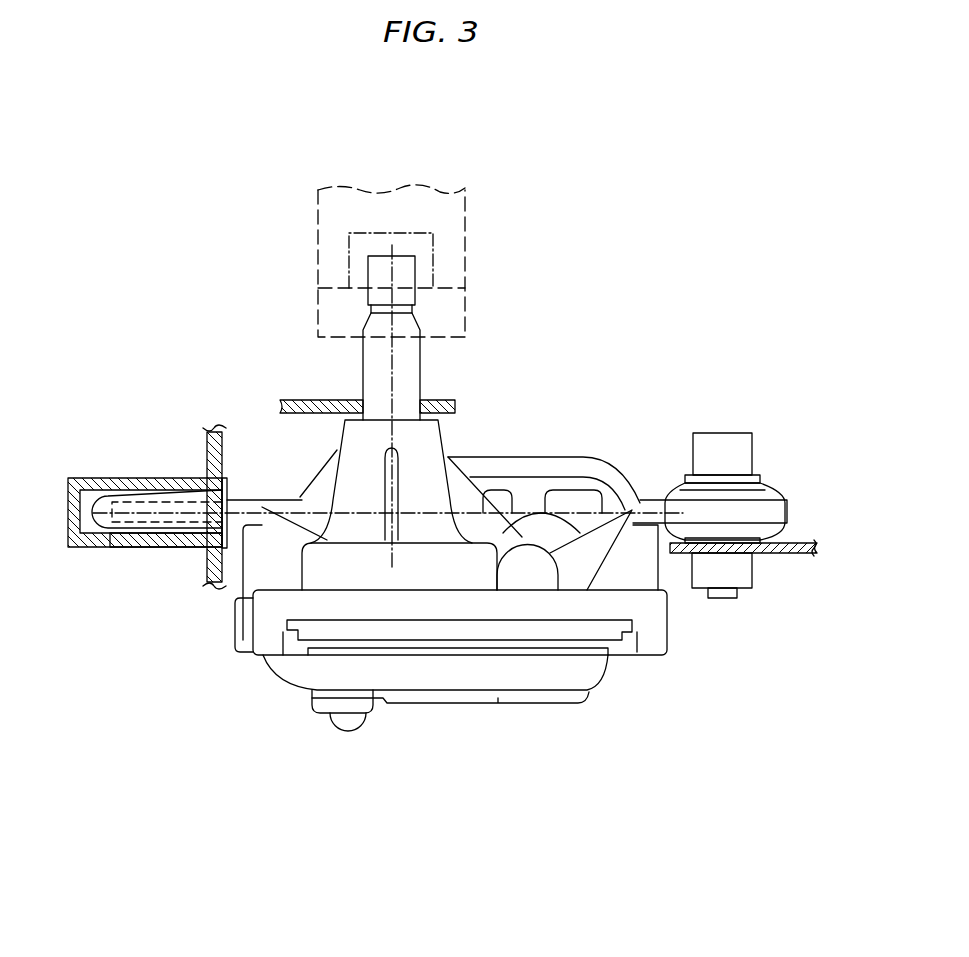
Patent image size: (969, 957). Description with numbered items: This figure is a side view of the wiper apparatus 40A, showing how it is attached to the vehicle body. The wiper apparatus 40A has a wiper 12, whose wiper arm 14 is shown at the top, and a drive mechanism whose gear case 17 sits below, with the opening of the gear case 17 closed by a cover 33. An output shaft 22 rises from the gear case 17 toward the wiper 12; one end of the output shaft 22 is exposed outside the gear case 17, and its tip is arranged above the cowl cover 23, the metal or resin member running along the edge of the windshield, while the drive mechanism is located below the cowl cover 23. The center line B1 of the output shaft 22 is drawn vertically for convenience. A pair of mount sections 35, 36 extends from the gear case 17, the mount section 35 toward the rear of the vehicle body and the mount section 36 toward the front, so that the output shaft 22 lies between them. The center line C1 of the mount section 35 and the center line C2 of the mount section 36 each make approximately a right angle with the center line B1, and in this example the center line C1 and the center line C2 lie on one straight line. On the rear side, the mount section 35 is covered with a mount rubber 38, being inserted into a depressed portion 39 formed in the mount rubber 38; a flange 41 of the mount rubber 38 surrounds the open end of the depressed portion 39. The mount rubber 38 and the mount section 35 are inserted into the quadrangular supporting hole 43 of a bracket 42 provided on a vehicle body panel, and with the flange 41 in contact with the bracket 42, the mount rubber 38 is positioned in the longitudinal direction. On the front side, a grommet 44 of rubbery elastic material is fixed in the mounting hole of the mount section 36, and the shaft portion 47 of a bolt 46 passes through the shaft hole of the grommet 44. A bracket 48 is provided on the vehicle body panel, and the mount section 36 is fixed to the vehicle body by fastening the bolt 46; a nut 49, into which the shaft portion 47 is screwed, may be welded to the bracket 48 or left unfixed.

The wiper 12 is at (326, 167).
The wiper arm 14 is at (318, 232).
The output shaft 22 is at (407, 367).
The cowl cover 23 is at (310, 400).
The center line of the output shaft B1 is at (392, 400).
The wiper apparatus 40A is at (607, 314).
The center line of the mount section C1 is at (312, 512).
The center line of the mount section C2 is at (638, 510).
The gear case 17 is at (671, 637).
The cover 33 is at (543, 670).
The bracket 42 is at (207, 562).
The flange 41 is at (232, 490).
The supporting hole 43 is at (90, 480).
The depressed portion 39 is at (113, 547).
The mount section 35 is at (152, 485).
The mount rubber 38 is at (190, 500).
The mount section 36 is at (695, 510).
The bolt 46 is at (723, 445).
The grommet 44 is at (775, 495).
The bracket 48 is at (810, 553).
The nut 49 is at (700, 595).
The shaft portion 47 is at (727, 598).